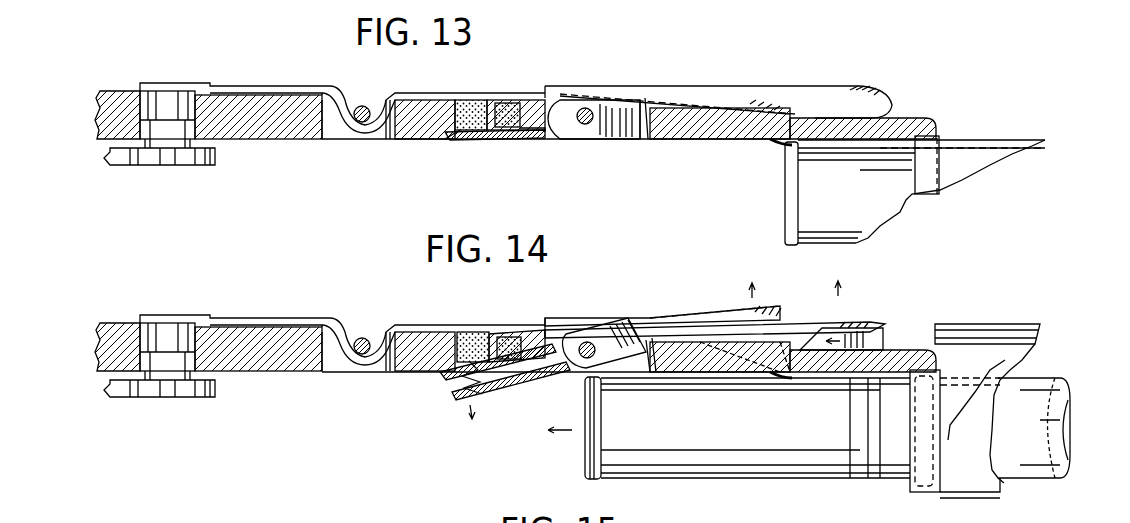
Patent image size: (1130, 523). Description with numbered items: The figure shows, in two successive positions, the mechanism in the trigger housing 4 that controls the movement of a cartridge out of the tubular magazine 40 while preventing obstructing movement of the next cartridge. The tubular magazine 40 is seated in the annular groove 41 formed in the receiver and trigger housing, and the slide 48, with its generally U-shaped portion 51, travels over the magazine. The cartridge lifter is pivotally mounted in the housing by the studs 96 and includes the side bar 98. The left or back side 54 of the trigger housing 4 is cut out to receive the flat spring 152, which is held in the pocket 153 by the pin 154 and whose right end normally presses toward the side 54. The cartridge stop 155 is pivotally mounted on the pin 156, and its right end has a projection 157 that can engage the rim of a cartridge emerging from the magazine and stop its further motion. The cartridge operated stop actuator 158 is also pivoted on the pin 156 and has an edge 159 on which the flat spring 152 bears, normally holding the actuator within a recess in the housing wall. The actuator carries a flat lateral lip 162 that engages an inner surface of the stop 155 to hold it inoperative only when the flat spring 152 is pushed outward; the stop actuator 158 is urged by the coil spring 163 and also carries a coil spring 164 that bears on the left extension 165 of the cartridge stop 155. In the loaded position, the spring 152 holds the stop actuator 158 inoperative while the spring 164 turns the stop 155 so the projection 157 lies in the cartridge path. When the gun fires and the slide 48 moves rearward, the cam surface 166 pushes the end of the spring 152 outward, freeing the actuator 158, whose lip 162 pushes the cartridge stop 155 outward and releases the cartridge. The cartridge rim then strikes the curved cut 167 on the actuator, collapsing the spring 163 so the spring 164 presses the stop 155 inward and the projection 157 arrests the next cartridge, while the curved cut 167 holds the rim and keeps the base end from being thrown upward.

In FIG. 13, the trigger housing 4 is at (108, 93).
In FIG. 14, the trigger housing 4 is at (104, 326).
In FIG. 13, the tubular magazine 40 is at (1002, 166).
In FIG. 14, the tubular magazine 40 is at (944, 490).
In FIG. 13, the annular groove 41 is at (938, 138).
In FIG. 14, the annular groove 41 is at (934, 380).
In FIG. 14, the slide 48 is at (1020, 352).
In FIG. 14, the U-shaped portion 51 is at (1000, 330).
In FIG. 13, the side of trigger housing 54 is at (250, 134).
In FIG. 14, the side of trigger housing 54 is at (232, 368).
In FIG. 13, the stud 96 is at (170, 120).
In FIG. 14, the stud 96 is at (168, 352).
In FIG. 13, the side bar 98 is at (186, 162).
In FIG. 14, the side bar 98 is at (172, 396).
In FIG. 13, the flat spring 152 is at (704, 94).
In FIG. 14, the flat spring 152 is at (668, 318).
In FIG. 13, the pocket 153 is at (324, 132).
In FIG. 14, the pocket 153 is at (324, 372).
In FIG. 13, the pin 154 is at (363, 106).
In FIG. 14, the pin 154 is at (361, 342).
In FIG. 13, the cartridge stop 155 is at (656, 104).
In FIG. 14, the cartridge stop 155 is at (728, 314).
In FIG. 13, the pin 156 is at (584, 108).
In FIG. 14, the pin 156 is at (582, 344).
In FIG. 13, the projection 157 is at (774, 144).
In FIG. 14, the projection 157 is at (780, 350).
In FIG. 13, the cartridge operated stop actuator 158 is at (600, 124).
In FIG. 14, the cartridge operated stop actuator 158 is at (600, 320).
In FIG. 13, the edge 159 is at (640, 104).
In FIG. 14, the edge 159 is at (648, 330).
In FIG. 13, the flat lateral lip 162 is at (650, 128).
In FIG. 14, the flat lateral lip 162 is at (612, 380).
In FIG. 13, the coil spring 163 is at (462, 140).
In FIG. 14, the coil spring 163 is at (460, 374).
In FIG. 13, the coil spring 164 is at (497, 100).
In FIG. 14, the coil spring 164 is at (524, 376).
In FIG. 13, the left extension 165 is at (506, 90).
In FIG. 14, the left extension 165 is at (492, 326).
In FIG. 14, the cam surface 166 is at (824, 324).
In FIG. 13, the curved cut 167 is at (492, 133).
In FIG. 14, the curved cut 167 is at (488, 396).